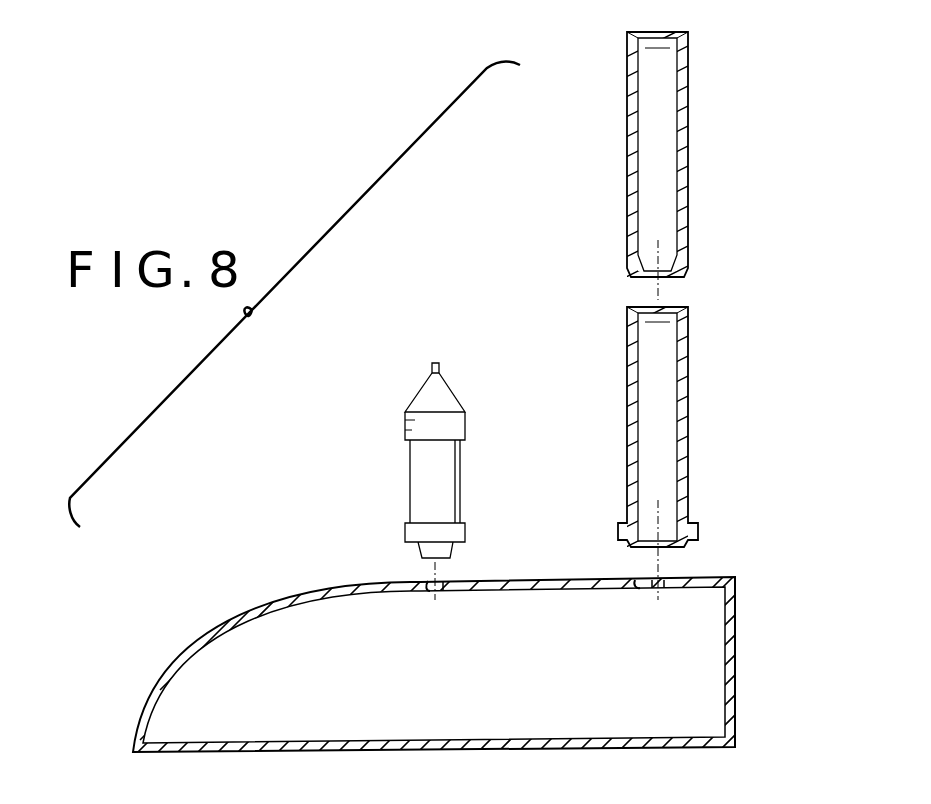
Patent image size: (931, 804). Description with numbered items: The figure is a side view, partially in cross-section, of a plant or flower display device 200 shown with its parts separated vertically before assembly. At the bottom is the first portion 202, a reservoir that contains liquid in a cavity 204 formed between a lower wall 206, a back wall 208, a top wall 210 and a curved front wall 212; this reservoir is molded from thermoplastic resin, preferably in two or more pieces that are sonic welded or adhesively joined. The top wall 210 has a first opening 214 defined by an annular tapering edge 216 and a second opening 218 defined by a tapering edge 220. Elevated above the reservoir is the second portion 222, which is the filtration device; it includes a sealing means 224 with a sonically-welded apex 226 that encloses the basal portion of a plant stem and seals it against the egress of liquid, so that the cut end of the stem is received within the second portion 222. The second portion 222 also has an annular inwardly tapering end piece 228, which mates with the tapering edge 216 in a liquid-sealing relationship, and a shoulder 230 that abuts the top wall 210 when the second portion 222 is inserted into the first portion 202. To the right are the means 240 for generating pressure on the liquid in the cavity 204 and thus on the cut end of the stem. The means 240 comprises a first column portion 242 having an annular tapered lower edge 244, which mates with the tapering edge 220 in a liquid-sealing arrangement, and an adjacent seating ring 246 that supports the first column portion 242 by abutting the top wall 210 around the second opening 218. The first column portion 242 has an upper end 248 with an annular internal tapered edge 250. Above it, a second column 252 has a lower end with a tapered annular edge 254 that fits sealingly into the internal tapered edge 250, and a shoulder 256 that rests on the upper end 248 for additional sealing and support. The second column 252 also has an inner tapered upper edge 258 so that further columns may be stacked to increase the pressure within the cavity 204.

The plant or flower display device 200 is at (248, 575).
The first portion 202 is at (128, 718).
The cavity 204 is at (541, 714).
The lower wall 206 is at (486, 751).
The back wall 208 is at (737, 668).
The top wall 210 is at (508, 583).
The curved front wall 212 is at (205, 644).
The first opening 214 is at (442, 593).
The annular tapering edge 216 is at (428, 590).
The second opening 218 is at (667, 590).
The tapering edge 220 is at (640, 590).
The second portion 222 is at (426, 459).
The sealing means 224 is at (428, 397).
The sonically-welded apex 226 is at (432, 365).
The annular inwardly tapering end piece 228 is at (415, 553).
The shoulder 230 is at (460, 546).
The means for generating pressure 240 is at (518, 293).
The first column portion 242 is at (690, 422).
The annular tapered lower edge 244 is at (690, 541).
The seating ring 246 is at (700, 529).
The upper end 248 is at (690, 314).
The annular internal tapered edge 250 is at (637, 320).
The second column 252 is at (690, 113).
The tapered annular edge 254 is at (635, 273).
The shoulder 256 is at (686, 268).
The inner tapered upper edge 258 is at (636, 36).